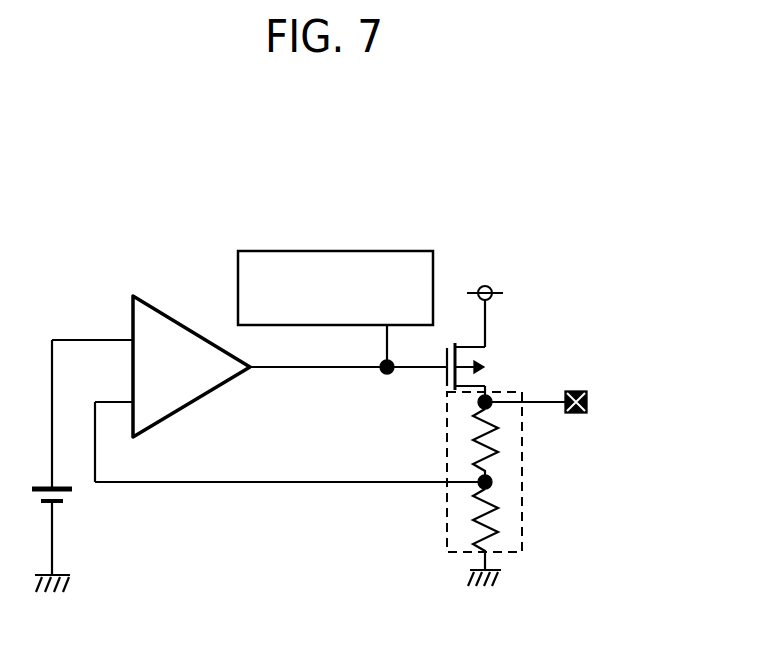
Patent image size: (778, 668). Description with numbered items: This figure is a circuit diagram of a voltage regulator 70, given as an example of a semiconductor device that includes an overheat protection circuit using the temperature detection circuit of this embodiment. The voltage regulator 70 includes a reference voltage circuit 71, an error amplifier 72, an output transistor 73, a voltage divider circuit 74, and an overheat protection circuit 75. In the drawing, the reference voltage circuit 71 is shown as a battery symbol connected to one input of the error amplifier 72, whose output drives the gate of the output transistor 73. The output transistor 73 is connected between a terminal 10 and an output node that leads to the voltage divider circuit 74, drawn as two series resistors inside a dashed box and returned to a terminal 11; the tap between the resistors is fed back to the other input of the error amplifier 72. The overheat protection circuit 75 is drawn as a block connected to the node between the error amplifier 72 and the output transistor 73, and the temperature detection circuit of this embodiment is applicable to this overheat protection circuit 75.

The voltage regulator 70 is at (618, 275).
The reference voltage circuit 71 is at (68, 500).
The error amplifier 72 is at (128, 315).
The output transistor 73 is at (487, 366).
The voltage divider circuit 74 is at (522, 473).
The overheat protection circuit 75 is at (350, 243).
The power supply terminal 10 is at (485, 300).
The ground terminal 11 is at (484, 584).